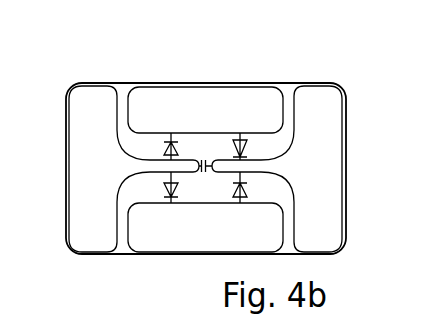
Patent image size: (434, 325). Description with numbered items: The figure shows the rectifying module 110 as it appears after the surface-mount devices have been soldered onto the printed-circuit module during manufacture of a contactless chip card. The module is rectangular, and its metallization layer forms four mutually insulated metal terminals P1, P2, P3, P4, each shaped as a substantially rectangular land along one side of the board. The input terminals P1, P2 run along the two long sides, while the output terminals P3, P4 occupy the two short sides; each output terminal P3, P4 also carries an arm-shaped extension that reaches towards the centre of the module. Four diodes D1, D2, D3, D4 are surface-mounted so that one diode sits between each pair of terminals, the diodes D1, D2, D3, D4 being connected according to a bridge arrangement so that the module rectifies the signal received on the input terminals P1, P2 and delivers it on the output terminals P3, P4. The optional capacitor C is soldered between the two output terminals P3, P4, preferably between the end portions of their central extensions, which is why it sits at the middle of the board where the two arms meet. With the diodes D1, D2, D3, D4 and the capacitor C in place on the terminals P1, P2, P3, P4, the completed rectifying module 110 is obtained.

The rectifying module 110 is at (99, 67).
The input terminal P1 is at (205, 110).
The input terminal P2 is at (205, 227).
The output terminal P3 is at (134, 169).
The output terminal P4 is at (277, 169).
The diode D1 is at (251, 146).
The diode D2 is at (157, 187).
The diode D3 is at (250, 187).
The diode D4 is at (157, 146).
The capacitor C is at (204, 175).